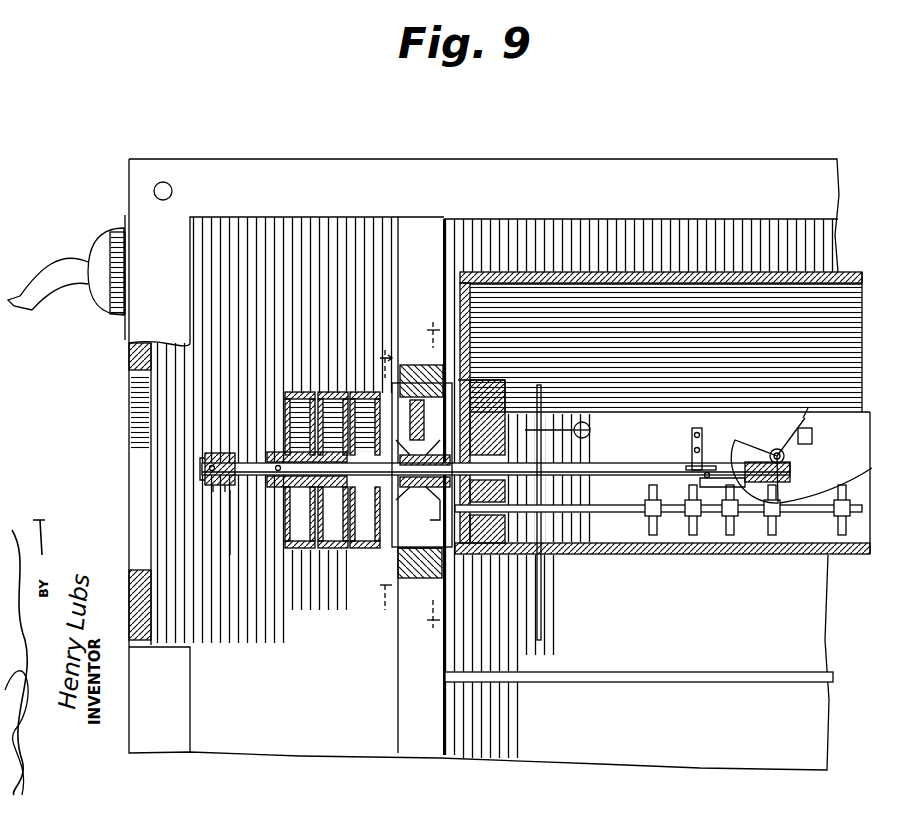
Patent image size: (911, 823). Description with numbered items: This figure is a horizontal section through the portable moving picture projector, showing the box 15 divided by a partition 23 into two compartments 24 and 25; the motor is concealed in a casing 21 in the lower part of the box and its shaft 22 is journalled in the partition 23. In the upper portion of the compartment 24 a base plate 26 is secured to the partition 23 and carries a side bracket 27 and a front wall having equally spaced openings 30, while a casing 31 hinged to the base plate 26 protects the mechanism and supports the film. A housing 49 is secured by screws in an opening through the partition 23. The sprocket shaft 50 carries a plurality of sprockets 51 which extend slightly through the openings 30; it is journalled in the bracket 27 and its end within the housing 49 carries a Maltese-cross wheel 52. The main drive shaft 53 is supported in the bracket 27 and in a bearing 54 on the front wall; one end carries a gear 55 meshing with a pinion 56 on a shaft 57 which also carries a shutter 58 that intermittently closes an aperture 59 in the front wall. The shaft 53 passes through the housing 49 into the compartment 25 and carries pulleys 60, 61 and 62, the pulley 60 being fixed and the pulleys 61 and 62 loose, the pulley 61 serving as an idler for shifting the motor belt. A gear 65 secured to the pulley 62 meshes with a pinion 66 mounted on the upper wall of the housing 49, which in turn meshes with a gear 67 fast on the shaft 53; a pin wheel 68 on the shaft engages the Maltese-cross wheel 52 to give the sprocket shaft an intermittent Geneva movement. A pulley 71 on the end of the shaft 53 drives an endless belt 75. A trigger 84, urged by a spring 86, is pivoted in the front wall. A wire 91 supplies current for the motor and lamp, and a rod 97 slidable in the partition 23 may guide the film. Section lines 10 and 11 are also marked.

The box 15 is at (444, 165).
The compartment 25 is at (290, 245).
The partition 23 is at (430, 242).
The compartment 24 is at (686, 242).
The shaft 22 is at (886, 313).
The casing 21 is at (890, 533).
The casing 31 is at (752, 273).
The side bracket 27 is at (482, 430).
The base plate 26 is at (722, 556).
The pinion 66 is at (473, 400).
The pin wheel 68 is at (487, 485).
The gear 67 is at (492, 412).
The main drive shaft 53 is at (290, 478).
The pulley 71 is at (220, 452).
The endless belt 75 is at (236, 512).
The pulley 60 is at (302, 550).
The pulley 61 is at (333, 549).
The pulley 62 is at (358, 552).
The gear 65 is at (396, 500).
The Maltese-cross wheel 52 is at (430, 518).
The housing 49 is at (398, 570).
The section line 10- 10 is at (401, 478).
The section line 11- 11 is at (420, 471).
The trigger 84 is at (542, 610).
The spring 86 is at (560, 430).
The sprocket shaft 50 is at (553, 500).
The sprockets 51 is at (648, 490).
The openings 30 is at (652, 497).
The bearing 54 is at (702, 430).
The gear 55 is at (810, 470).
The pinion 56 is at (775, 449).
The shaft 57 is at (826, 442).
The aperture 59 is at (795, 445).
The shutter 58 is at (872, 468).
The rod 97 is at (718, 672).
The wire 91 is at (72, 272).